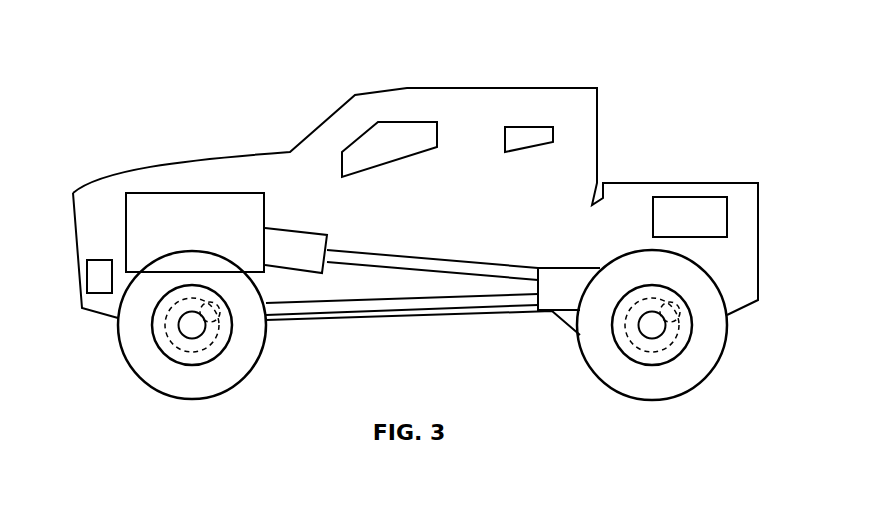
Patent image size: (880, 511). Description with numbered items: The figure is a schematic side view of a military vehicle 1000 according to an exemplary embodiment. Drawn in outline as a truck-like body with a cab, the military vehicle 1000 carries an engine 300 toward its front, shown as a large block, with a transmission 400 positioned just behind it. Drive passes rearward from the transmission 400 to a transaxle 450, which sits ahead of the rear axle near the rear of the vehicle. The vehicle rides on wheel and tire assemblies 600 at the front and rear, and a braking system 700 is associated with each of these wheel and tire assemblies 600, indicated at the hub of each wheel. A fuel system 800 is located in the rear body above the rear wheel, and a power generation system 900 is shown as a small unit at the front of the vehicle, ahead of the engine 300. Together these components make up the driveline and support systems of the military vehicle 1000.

The military vehicle 1000 is at (193, 30).
The engine 300 is at (207, 207).
The transmission 400 is at (293, 243).
The transaxle 450 is at (565, 298).
The wheel and tire assemblies 600 is at (117, 410).
The braking system 700 is at (227, 313).
The fuel system 800 is at (685, 205).
The power generation system 900 is at (98, 278).